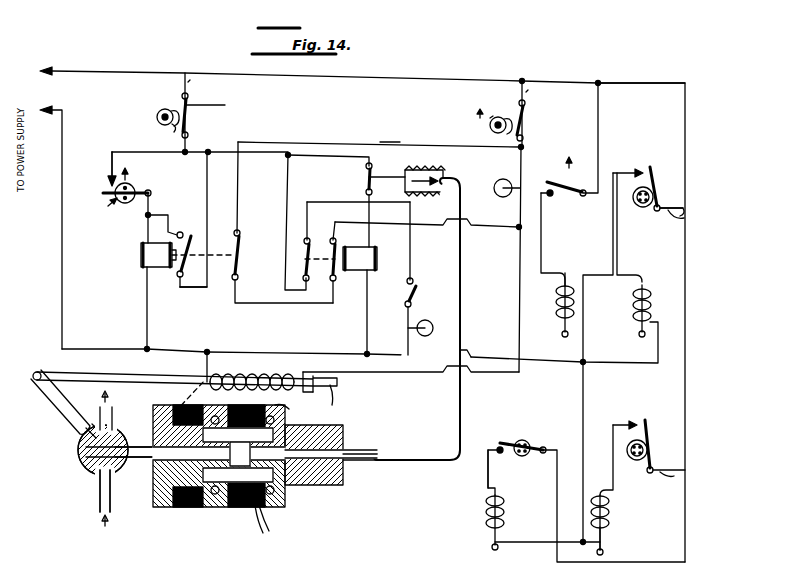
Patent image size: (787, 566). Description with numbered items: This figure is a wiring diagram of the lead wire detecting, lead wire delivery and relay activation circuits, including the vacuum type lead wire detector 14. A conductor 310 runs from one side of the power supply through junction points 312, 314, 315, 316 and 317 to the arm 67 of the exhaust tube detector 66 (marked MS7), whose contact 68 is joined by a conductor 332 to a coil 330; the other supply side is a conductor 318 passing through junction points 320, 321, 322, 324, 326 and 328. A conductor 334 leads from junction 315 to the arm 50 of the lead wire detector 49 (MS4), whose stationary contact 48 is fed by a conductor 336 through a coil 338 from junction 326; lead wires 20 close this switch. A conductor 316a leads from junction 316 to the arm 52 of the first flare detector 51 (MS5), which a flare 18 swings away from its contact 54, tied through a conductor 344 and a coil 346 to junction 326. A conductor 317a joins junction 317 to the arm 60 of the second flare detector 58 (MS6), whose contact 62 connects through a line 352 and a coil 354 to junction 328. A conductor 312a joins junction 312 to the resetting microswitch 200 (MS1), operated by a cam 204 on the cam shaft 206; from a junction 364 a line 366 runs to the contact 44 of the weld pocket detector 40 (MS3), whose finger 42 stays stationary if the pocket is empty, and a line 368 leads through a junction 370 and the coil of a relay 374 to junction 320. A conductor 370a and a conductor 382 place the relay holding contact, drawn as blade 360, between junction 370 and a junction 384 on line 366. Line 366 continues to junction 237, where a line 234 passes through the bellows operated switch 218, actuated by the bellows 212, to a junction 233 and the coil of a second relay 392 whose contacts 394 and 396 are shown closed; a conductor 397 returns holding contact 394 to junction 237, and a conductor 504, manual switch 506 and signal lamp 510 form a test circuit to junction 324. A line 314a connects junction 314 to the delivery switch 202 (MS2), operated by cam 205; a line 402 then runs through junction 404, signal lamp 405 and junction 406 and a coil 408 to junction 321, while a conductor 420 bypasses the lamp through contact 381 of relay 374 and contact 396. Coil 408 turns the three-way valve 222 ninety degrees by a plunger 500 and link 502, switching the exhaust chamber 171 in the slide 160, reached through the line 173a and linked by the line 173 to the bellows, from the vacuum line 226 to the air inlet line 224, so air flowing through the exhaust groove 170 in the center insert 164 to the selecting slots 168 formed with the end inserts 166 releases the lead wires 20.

The conductor 310 is at (116, 71).
The junction point 312 is at (189, 66).
The conductor 312a is at (190, 82).
The microswitch MS1 is at (190, 101).
The cycle resetting microswitch 200 is at (221, 105).
The second longitudinal cam shaft 206 is at (163, 110).
The microswitch operating cam 204 is at (172, 125).
The line 366 is at (112, 150).
The junction point 384 is at (214, 149).
The junction point 364 is at (189, 219).
The contact 44 is at (110, 182).
The microswitch MS3 is at (133, 186).
The detecting microswitch arm 42 is at (102, 193).
The weld pocket detector 40 is at (70, 230).
The junction point 370 is at (155, 210).
The conductor 370a is at (164, 227).
The switch 360 is at (188, 232).
The line 368 is at (140, 276).
The relay 374 is at (150, 287).
The conductor 382 is at (196, 288).
The junction point 320 is at (136, 347).
The junction point 321 is at (207, 350).
The junction point 322 is at (364, 354).
The junction point 324 is at (405, 354).
The conductor 318 is at (60, 292).
The junction point 237 is at (280, 160).
The line 234 is at (328, 141).
The conductor 420 is at (380, 139).
The contact 381 is at (235, 257).
The conductor 397 is at (284, 233).
The holding contact 394 is at (296, 226).
The contact 396 is at (332, 238).
The junction point 233 is at (368, 194).
The bellows operated microswitch 218 is at (366, 170).
The pressure responsive actuating means 212 is at (422, 194).
The vacuum type lead wire detector 14 is at (417, 463).
The conductor 504 is at (396, 266).
The manually operated switch 506 is at (414, 282).
The signal lamp 510 is at (428, 320).
The second relay 392 is at (359, 270).
The junction point 314 is at (526, 76).
The line 314a is at (528, 93).
The junction point 315 is at (603, 76).
The lead wire discharge microswitch 202 is at (518, 106).
The microswitch MS2 is at (524, 120).
The microswitch operating cam 205 is at (486, 112).
The conductor 334 is at (600, 103).
The junction point 404 is at (524, 147).
The signal lamp 405 is at (502, 180).
The stationary contact 48 is at (539, 186).
The microswitch arm 50 is at (546, 182).
The microswitch MS4 is at (577, 190).
The lead wire detector 49 is at (571, 267).
The lead wires 20 is at (433, 376).
The conductor 344 is at (579, 296).
The coil 338 is at (574, 302).
The junction point 406 is at (518, 228).
The line 402 is at (516, 301).
The junction point 326 is at (582, 360).
The conductor 336 is at (586, 346).
The coil 346 is at (636, 306).
The first flare detector 51 is at (635, 227).
The contact 54 is at (638, 164).
The swingable microswitch arm 52 is at (652, 166).
The microswitch MS5 is at (656, 168).
The flare 18 is at (636, 191).
The junction point 316 is at (682, 203).
The conductor 316a is at (684, 217).
The exhaust tube detector 66 is at (586, 506).
The contact 68 is at (500, 442).
The swingable microswitch arm 67 is at (520, 436).
The microswitch MS7 is at (534, 445).
The coil 330 is at (490, 542).
The conductor 332 is at (488, 477).
The junction point 328 is at (562, 545).
The second flare detector 58 is at (633, 478).
The contact 62 is at (626, 424).
The microswitch MS6 is at (646, 417).
The microswitch arm 60 is at (648, 416).
The junction point 317 is at (674, 464).
The conductor 317a is at (676, 481).
The line 352 is at (610, 481).
The coil 354 is at (614, 528).
The operating plunger 500 is at (127, 379).
The connecting link 502 is at (62, 408).
The line 226 is at (90, 440).
The three-way solenoid operated valve 222 is at (86, 470).
The air inlet line 224 is at (98, 500).
The exhaust line 173a is at (138, 462).
The slide 160 is at (340, 490).
The lead wire selecting slots 168 is at (310, 420).
The center insert 164 is at (241, 506).
The end inserts 166 is at (179, 506).
The exhaust groove 170 is at (204, 508).
The exhaust chamber 171 is at (180, 414).
The coil 408 is at (222, 378).
The pressure detecting line 173 is at (360, 454).